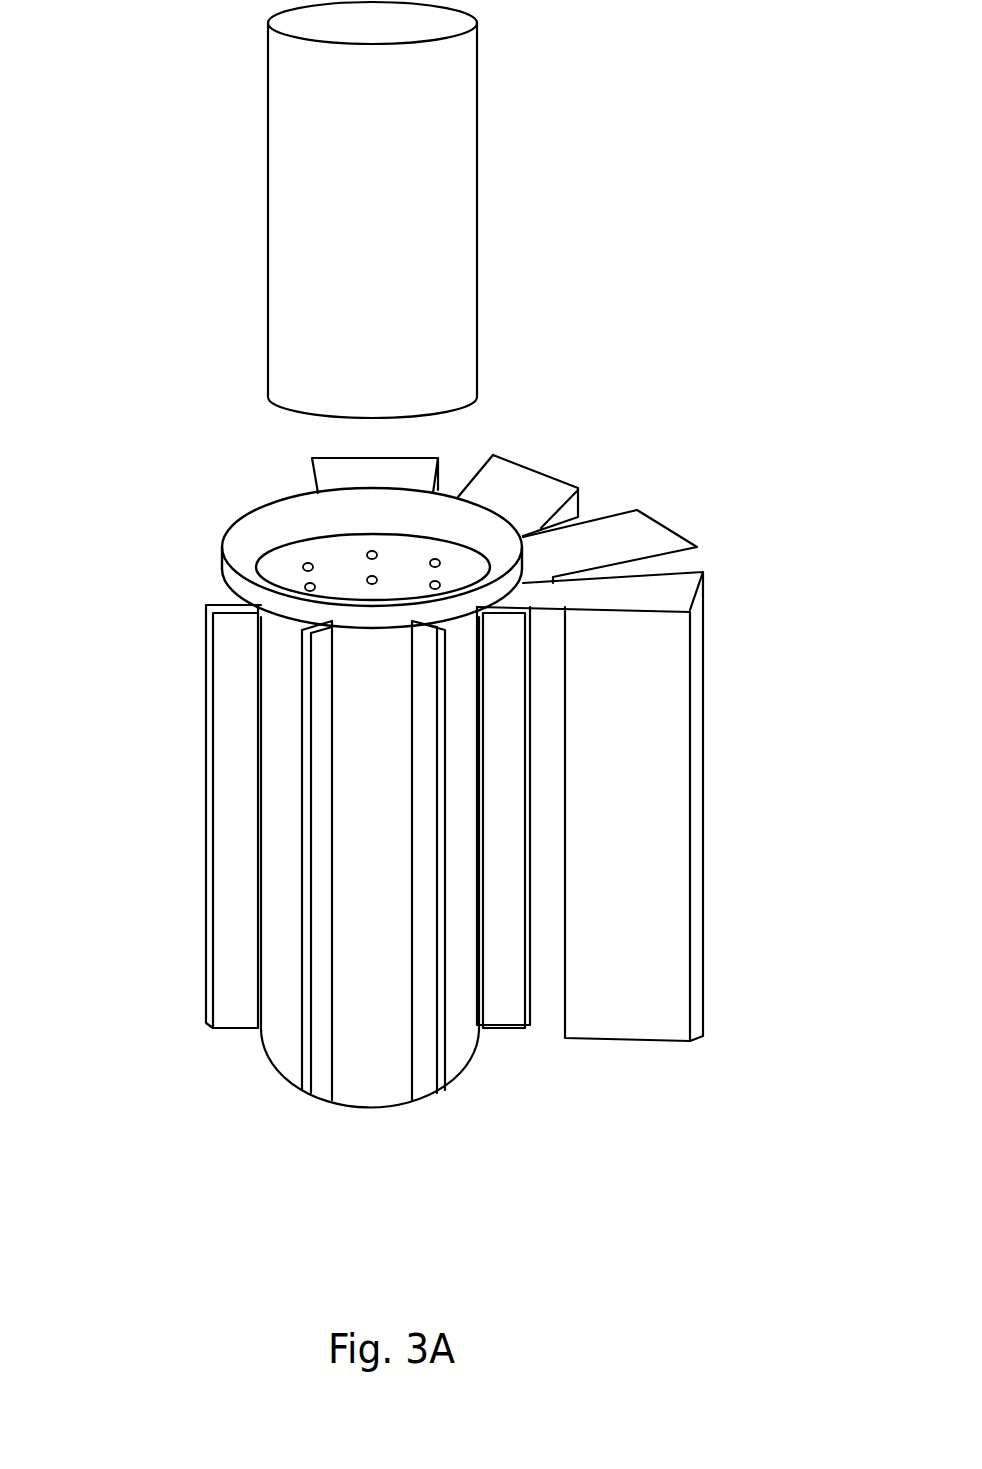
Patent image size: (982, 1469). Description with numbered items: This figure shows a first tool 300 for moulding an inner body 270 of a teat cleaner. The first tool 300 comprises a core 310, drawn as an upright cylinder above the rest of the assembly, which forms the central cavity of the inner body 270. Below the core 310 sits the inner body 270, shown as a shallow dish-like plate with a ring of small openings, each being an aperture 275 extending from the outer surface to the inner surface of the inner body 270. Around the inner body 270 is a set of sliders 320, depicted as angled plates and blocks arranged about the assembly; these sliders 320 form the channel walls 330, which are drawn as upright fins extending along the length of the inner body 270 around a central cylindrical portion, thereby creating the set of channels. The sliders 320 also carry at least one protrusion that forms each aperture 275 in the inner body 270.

The first tool 300 is at (742, 55).
The core 310 is at (430, 245).
The set of sliders 320 is at (593, 593).
The inner body 270 is at (263, 538).
The aperture 275 is at (370, 552).
The channel walls 330 is at (497, 705).